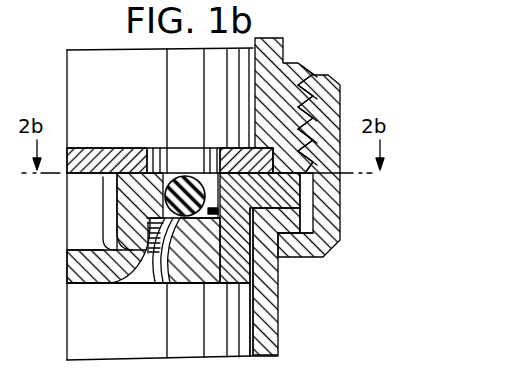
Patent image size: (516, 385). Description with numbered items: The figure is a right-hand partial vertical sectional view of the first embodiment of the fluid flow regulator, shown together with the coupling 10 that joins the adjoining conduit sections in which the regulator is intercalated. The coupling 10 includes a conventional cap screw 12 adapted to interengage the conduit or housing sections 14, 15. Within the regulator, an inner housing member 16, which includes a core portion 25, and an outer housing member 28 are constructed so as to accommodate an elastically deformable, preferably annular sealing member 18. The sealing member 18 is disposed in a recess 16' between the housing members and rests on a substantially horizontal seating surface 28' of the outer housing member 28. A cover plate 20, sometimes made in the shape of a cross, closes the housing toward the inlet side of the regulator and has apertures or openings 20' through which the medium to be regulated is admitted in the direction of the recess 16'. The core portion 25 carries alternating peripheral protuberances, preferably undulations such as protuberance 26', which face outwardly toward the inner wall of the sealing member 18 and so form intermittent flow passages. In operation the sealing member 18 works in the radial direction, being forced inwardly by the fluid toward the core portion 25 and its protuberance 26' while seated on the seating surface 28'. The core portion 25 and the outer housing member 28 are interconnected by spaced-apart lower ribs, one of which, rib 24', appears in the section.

The coupling 10 is at (341, 247).
The cap screw 12 is at (330, 204).
The conduit or housing section 14 is at (270, 49).
The conduit or housing section 15 is at (266, 328).
The inner housing member 16 is at (203, 204).
The recess 16' is at (225, 132).
The sealing member 18 is at (176, 180).
The cover plate 20 is at (170, 143).
The apertures or openings 20' is at (145, 138).
The threaded stem 24' is at (145, 267).
The core portion 25 is at (80, 266).
The protuberance 26' is at (143, 228).
The outer housing member 28 is at (267, 242).
The seating surface 28' is at (289, 282).